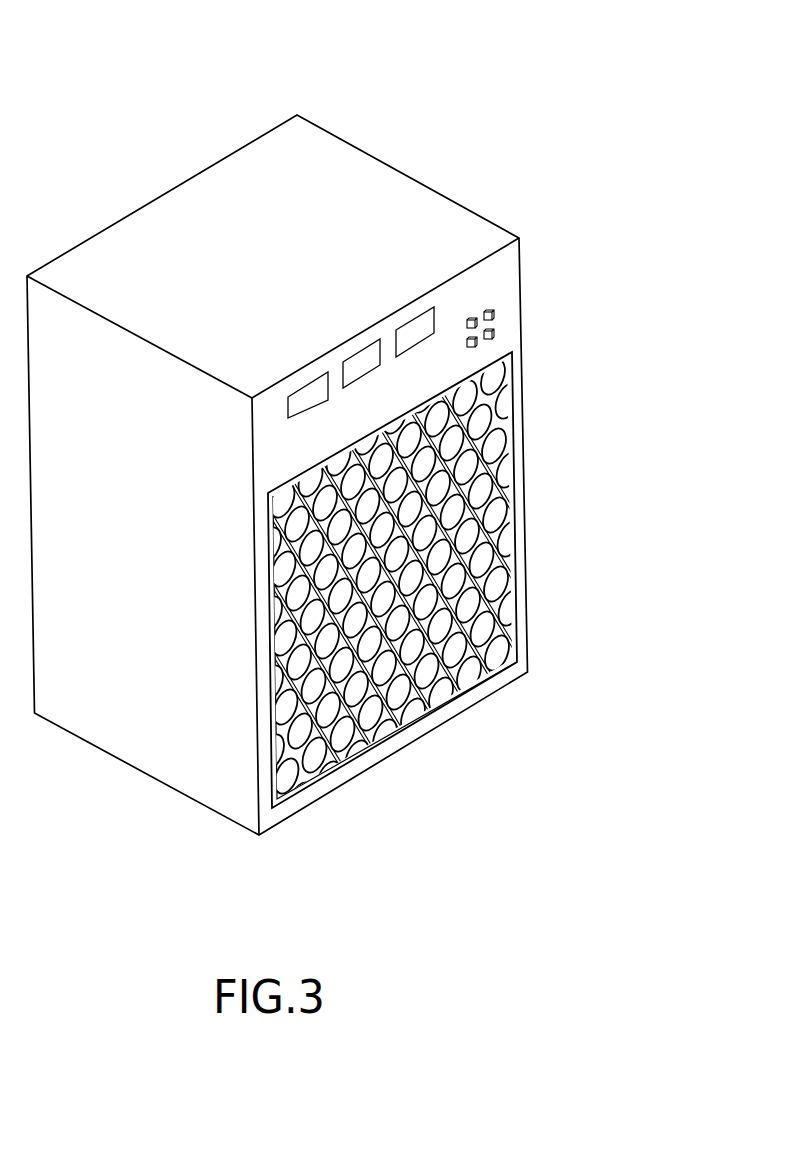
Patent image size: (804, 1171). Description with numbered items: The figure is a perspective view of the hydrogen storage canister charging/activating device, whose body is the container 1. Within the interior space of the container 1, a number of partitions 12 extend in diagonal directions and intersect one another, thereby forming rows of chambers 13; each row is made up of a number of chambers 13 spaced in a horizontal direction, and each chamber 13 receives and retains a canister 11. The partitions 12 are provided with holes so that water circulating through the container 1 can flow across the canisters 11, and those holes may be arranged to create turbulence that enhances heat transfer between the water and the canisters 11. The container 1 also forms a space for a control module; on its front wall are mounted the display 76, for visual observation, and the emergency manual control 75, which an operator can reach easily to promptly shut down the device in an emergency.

The container 1 is at (380, 141).
The canister 11 is at (488, 445).
The partition 12 is at (495, 530).
The chamber 13 is at (493, 417).
The emergency manual control 75 is at (500, 319).
The display 76 is at (285, 413).